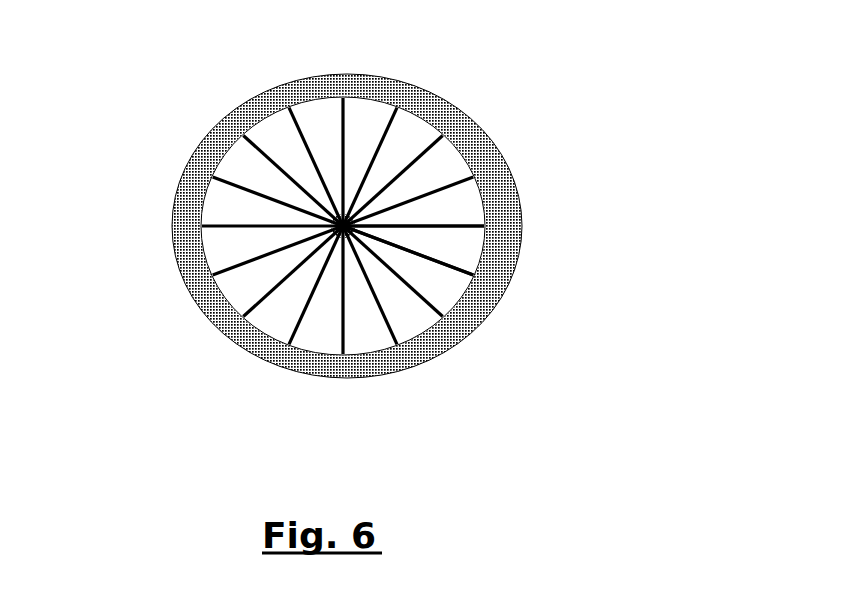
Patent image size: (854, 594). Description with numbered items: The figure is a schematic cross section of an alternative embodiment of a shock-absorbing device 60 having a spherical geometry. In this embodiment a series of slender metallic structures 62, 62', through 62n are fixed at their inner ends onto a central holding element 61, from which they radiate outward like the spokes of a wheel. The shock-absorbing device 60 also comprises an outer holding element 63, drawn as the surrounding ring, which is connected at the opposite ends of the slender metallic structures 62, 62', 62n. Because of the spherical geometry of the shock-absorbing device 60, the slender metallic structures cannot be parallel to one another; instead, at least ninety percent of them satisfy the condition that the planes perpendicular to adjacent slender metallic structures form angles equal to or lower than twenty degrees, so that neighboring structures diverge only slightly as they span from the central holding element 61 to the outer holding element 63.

The shock-absorbing device 60 is at (384, 208).
The central holding element 61 is at (222, 262).
The slender metallic structure 62 is at (352, 247).
The slender metallic structure 62' is at (468, 271).
The slender metallic structure 62n is at (473, 222).
The outer holding element 63 is at (370, 93).